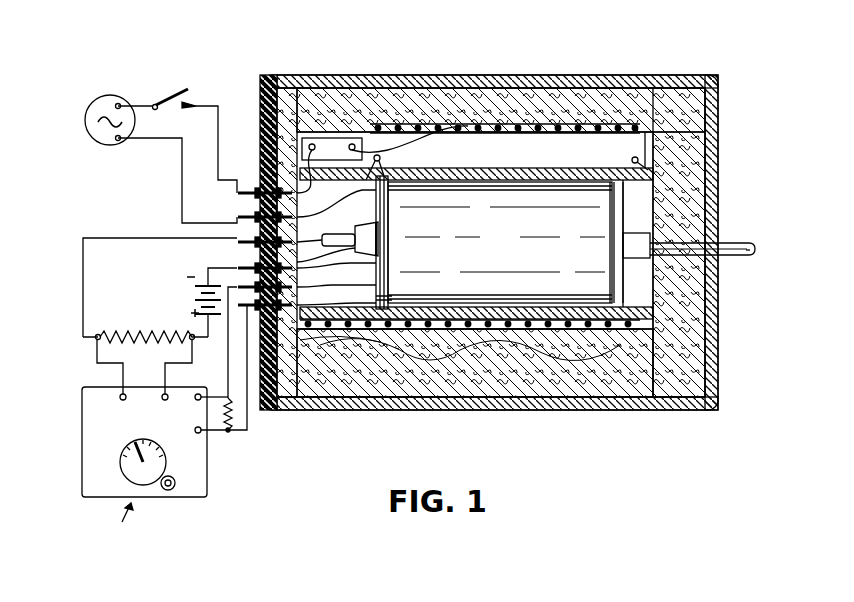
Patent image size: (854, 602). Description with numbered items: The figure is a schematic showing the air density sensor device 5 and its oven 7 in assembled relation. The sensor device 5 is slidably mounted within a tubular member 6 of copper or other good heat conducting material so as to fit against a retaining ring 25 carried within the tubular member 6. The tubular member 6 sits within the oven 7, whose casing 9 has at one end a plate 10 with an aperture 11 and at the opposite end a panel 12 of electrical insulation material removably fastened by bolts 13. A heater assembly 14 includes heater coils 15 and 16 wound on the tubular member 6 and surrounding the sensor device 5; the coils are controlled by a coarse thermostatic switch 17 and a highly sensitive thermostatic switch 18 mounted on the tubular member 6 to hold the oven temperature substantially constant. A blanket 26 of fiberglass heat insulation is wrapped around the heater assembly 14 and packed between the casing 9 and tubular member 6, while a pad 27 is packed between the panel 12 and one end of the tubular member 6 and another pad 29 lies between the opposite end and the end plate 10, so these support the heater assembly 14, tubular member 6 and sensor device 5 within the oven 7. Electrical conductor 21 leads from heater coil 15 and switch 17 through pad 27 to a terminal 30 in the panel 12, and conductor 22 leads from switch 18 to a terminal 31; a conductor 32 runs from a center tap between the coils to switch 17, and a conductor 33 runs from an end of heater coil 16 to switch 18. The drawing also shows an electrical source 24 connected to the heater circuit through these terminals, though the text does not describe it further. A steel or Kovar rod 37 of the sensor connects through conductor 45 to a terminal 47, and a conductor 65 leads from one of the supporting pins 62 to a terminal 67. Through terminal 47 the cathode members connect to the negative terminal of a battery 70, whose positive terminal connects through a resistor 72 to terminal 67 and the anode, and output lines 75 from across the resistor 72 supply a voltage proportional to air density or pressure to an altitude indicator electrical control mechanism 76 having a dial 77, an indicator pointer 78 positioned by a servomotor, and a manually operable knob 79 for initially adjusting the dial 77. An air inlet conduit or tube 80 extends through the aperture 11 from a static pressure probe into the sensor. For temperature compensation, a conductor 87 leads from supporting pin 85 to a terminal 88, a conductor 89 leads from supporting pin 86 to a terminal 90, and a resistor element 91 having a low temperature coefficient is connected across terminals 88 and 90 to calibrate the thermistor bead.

The air density sensor device 5 is at (481, 265).
The tubular member 6 is at (535, 169).
The oven 7 is at (662, 70).
The casing 9 is at (345, 76).
The end plate 10 is at (719, 136).
The aperture 11 is at (712, 232).
The panel 12 is at (260, 120).
The bolts 13 is at (267, 76).
The heater assembly 14 is at (468, 331).
The heater coil 15 is at (380, 336).
The heater coil 16 is at (578, 398).
The coarse thermostatic switch 17 is at (316, 156).
The highly sensitive thermostatic switch 18 is at (501, 153).
The electrical conductor 21 is at (213, 104).
The electrical conductor 22 is at (182, 170).
The AC power source 24 is at (105, 144).
The retaining ring 25 is at (165, 98).
The blanket 26 is at (465, 383).
The pad 27 is at (289, 398).
The pad 29 is at (706, 195).
The terminal 30 is at (257, 190).
The terminal 31 is at (257, 215).
The conductor 32 is at (440, 140).
The conductor 33 is at (632, 158).
The rod 37 is at (326, 257).
The electrical conductor 45 is at (308, 269).
The electrical terminal 47 is at (207, 258).
The supporting pins 62 is at (366, 228).
The electrical conductor 65 is at (337, 236).
The electrical terminal 67 is at (247, 242).
The battery 70 is at (193, 297).
The resistor 72 is at (140, 334).
The output lines 75 is at (124, 362).
The altitude indicator electrical control mechanism 76 is at (135, 409).
The dial 77 is at (167, 456).
The indicator pointer 78 is at (128, 470).
The knob 79 is at (176, 484).
The air inlet conduit 80 is at (746, 256).
The supporting pin 85 is at (336, 267).
The supporting pin 86 is at (384, 293).
The electrical conductor 87 is at (336, 285).
The electrical terminal 88 is at (240, 288).
The electrical conductor 89 is at (336, 301).
The electrical terminal 90 is at (248, 305).
The resistor element 91 is at (218, 426).